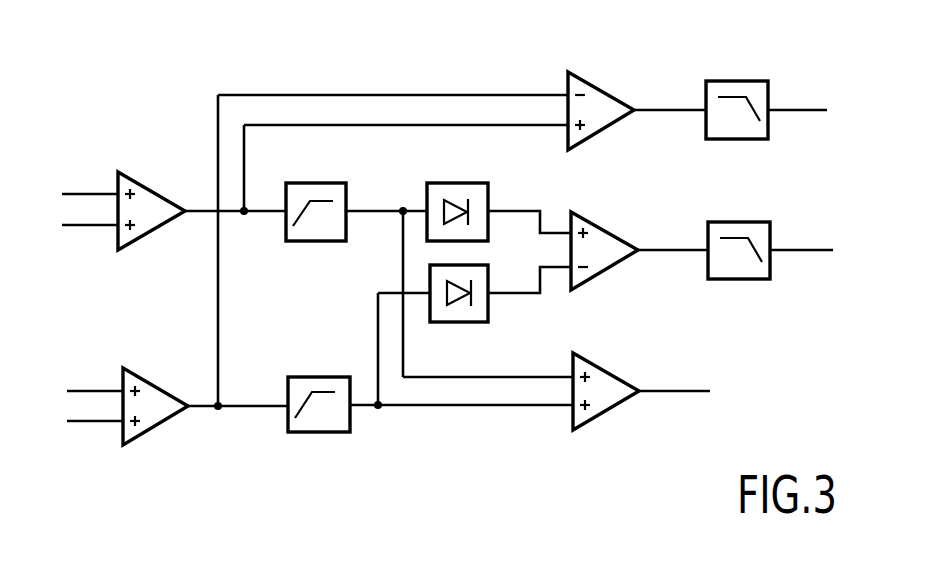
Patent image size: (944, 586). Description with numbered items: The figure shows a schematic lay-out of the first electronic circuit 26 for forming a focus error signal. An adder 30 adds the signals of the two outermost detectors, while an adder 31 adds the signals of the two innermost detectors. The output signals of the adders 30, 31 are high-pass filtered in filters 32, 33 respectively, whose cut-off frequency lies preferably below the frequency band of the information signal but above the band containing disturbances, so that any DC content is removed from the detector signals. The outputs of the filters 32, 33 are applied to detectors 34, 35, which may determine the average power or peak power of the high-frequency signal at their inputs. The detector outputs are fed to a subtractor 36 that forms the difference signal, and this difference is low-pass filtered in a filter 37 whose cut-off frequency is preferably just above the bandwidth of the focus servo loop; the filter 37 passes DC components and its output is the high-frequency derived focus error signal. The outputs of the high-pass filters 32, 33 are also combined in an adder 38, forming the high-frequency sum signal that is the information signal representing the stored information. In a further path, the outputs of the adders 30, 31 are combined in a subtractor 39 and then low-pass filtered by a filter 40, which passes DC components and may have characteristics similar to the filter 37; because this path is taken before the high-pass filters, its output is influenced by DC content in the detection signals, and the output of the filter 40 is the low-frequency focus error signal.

The first electronic circuit 26 is at (325, 50).
The adder 30 is at (152, 190).
The adder 31 is at (155, 386).
The high-pass filter 32 is at (322, 183).
The high-pass filter 33 is at (313, 377).
The detector 34 is at (465, 183).
The detector 35 is at (488, 283).
The subtractor 36 is at (603, 228).
The low-pass filter 37 is at (740, 222).
The adder 38 is at (615, 375).
The subtractor 39 is at (600, 89).
The low-pass filter 40 is at (738, 81).